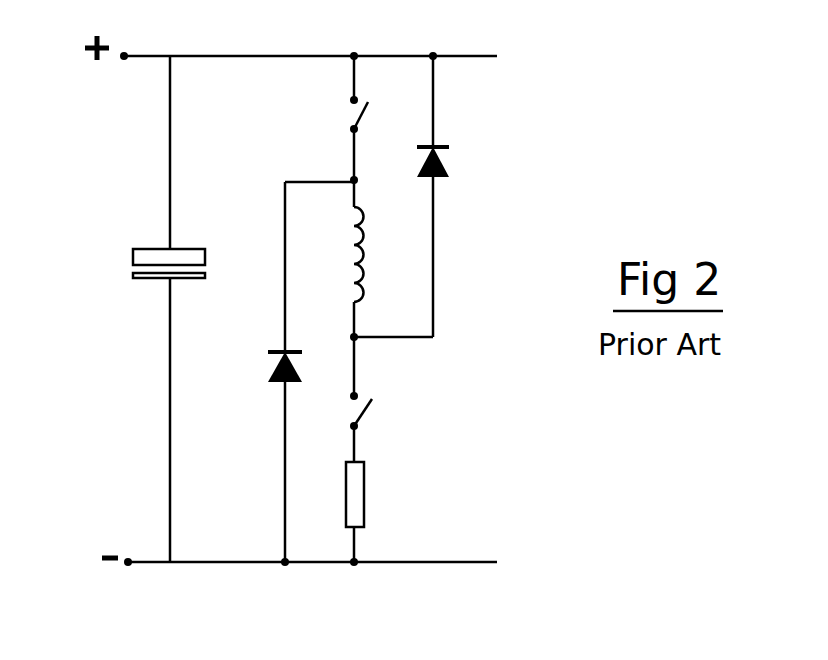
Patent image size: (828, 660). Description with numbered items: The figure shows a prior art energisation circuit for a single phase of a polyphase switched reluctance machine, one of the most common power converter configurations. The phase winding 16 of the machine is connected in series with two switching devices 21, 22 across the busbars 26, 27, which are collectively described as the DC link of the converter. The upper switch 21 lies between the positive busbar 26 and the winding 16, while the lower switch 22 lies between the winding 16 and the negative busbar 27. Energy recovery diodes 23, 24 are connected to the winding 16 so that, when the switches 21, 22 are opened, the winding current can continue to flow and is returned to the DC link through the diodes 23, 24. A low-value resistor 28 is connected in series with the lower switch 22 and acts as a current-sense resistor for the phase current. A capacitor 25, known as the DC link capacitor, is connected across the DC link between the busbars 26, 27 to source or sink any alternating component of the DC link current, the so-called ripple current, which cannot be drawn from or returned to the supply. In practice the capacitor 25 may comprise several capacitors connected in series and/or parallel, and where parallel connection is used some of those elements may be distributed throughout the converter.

The phase winding 16 is at (373, 232).
The switching device 21 is at (350, 119).
The switching device 22 is at (368, 410).
The energy recovery diode 23 is at (455, 155).
The energy recovery diode 24 is at (267, 359).
The capacitor 25 is at (128, 268).
The busbar 26 is at (253, 56).
The busbar 27 is at (235, 562).
The resistor 28 is at (365, 490).